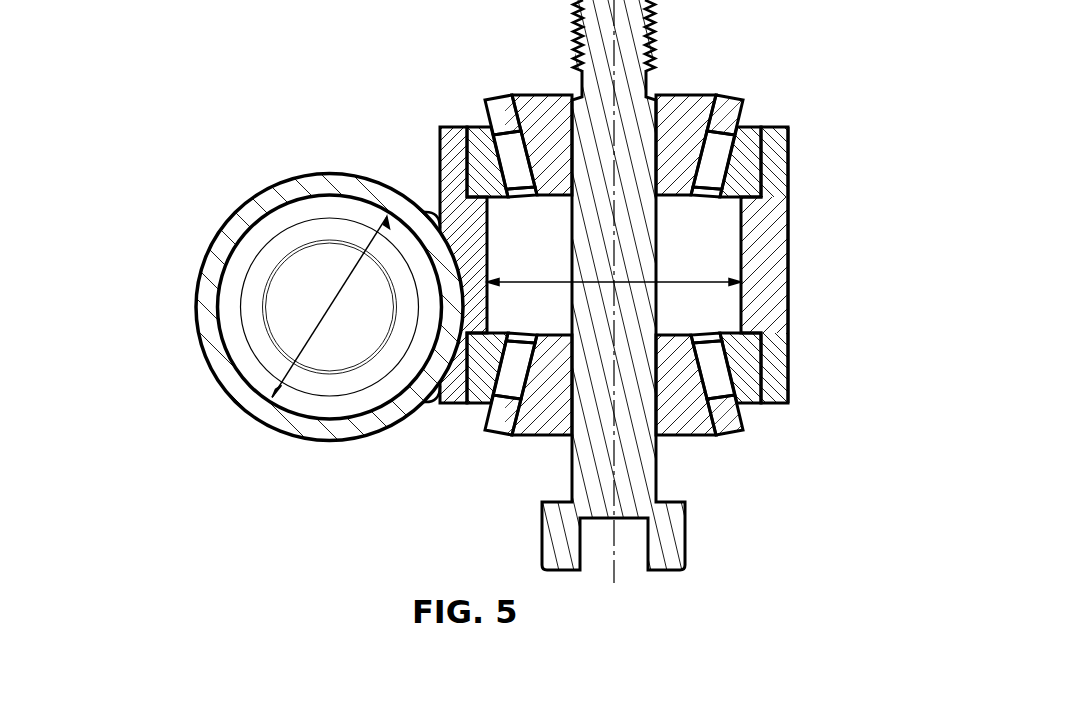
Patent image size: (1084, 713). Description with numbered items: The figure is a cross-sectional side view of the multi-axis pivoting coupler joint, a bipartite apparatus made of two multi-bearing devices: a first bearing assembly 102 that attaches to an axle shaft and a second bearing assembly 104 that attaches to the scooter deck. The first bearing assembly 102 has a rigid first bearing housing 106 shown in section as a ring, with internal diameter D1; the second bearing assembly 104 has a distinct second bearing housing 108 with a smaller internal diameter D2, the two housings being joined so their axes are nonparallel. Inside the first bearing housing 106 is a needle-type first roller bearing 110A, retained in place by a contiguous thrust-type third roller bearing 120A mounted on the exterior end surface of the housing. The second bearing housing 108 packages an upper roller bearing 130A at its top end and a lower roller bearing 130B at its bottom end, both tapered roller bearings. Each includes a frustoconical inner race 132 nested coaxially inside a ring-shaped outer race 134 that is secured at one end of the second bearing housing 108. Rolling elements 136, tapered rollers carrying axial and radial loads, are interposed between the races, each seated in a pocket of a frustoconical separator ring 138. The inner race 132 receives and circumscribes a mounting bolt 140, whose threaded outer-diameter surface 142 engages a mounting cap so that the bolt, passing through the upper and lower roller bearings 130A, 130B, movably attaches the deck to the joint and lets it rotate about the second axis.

The first bearing assembly 102 is at (268, 274).
The second bearing assembly 104 is at (818, 118).
The first bearing housing 106 is at (197, 309).
The second bearing housing 108 is at (788, 317).
The first roller bearing 110A is at (218, 275).
The third roller bearing 120A is at (282, 232).
The upper roller bearing 130A is at (565, 104).
The lower roller bearing 130B is at (445, 445).
The frustoconical inner race 132 is at (687, 100).
The ring-shaped outer race 134 is at (750, 133).
The rolling elements 136 is at (730, 168).
The frustoconical separator ring 138 is at (723, 98).
The mounting bolt 140 is at (582, 78).
The threaded outer-diameter surface 142 is at (573, 33).
The internal diameter D1 is at (308, 343).
The internal diameter D2 is at (692, 282).